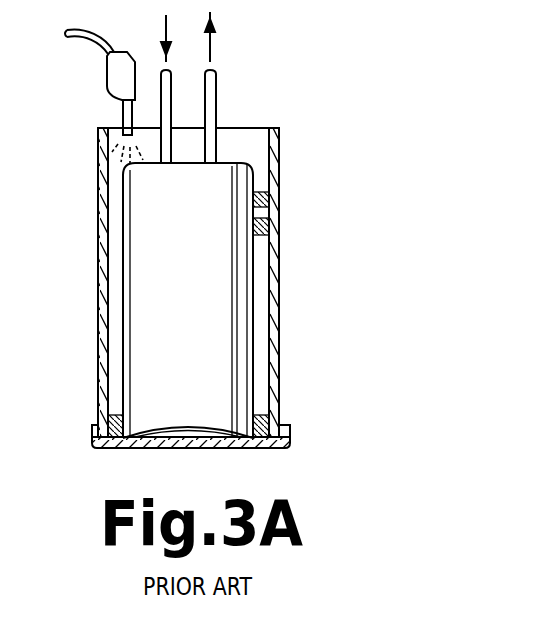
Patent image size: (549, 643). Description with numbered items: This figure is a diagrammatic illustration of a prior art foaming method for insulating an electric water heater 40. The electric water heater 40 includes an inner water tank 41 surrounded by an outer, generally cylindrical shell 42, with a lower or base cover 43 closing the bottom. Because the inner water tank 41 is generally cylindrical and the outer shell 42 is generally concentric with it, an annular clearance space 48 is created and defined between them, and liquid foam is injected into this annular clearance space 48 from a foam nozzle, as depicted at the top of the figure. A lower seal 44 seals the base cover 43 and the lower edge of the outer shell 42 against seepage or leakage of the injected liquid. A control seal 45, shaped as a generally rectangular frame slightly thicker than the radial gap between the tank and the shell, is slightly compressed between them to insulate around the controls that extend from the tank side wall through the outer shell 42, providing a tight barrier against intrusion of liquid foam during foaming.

The electric water heater 40 is at (216, 234).
The inner water tank 41 is at (240, 287).
The outer shell 42 is at (275, 311).
The base cover 43 is at (289, 437).
The lower seal 44 is at (260, 415).
The control seal 45 is at (262, 233).
The annular clearance space 48 is at (262, 357).